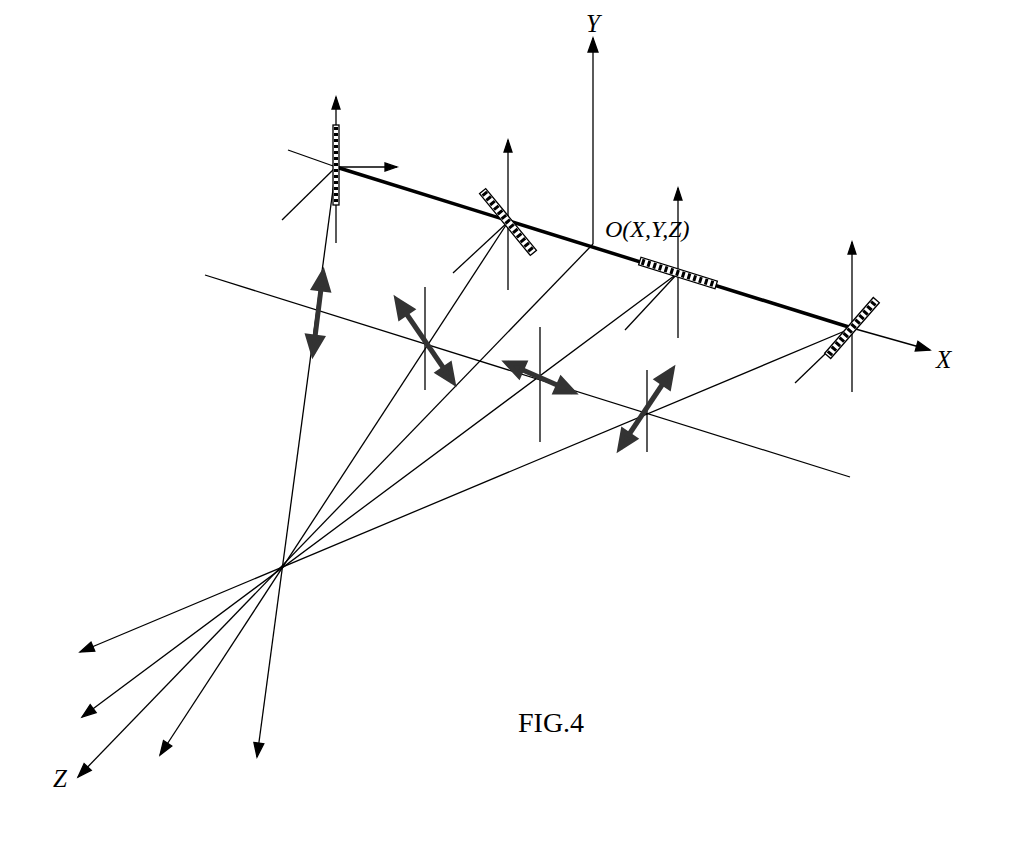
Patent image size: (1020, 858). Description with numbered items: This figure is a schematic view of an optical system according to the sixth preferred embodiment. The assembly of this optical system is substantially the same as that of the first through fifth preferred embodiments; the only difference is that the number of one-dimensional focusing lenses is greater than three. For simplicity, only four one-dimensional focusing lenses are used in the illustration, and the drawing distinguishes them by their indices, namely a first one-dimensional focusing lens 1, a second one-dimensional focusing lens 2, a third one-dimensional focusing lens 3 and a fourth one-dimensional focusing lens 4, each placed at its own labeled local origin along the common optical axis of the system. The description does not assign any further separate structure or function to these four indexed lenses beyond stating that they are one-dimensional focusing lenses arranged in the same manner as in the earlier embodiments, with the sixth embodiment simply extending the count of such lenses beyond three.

The first optical element at O1(X1,Y1,Z1) 1 is at (309, 170).
The second optical element at O2(X2,Y2,Z2) 2 is at (461, 215).
The third optical element at O3(X3,Y3,Z3) 3 is at (697, 263).
The fourth optical element at O4(X4,Y4,Z4) 4 is at (794, 317).